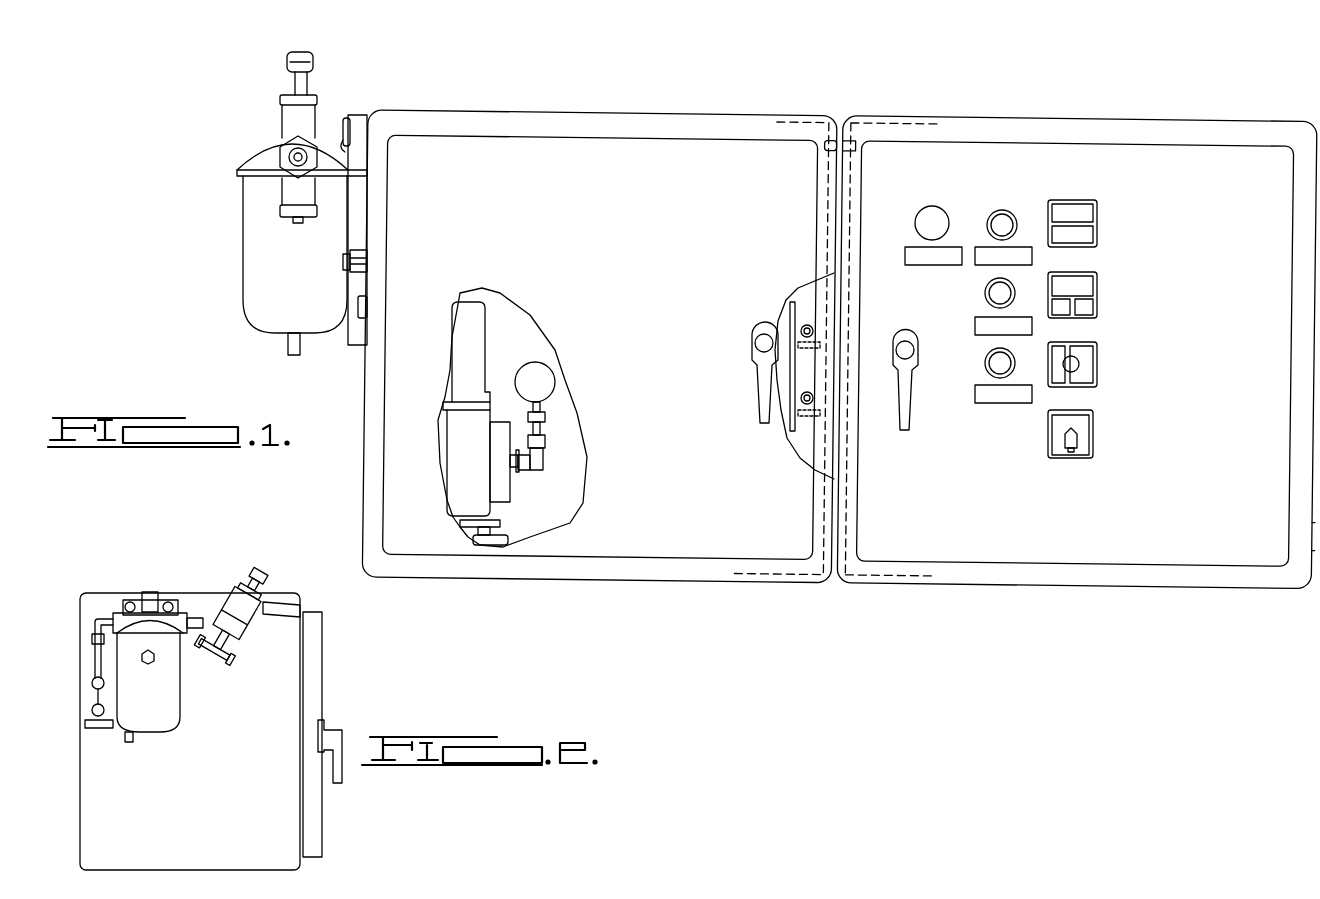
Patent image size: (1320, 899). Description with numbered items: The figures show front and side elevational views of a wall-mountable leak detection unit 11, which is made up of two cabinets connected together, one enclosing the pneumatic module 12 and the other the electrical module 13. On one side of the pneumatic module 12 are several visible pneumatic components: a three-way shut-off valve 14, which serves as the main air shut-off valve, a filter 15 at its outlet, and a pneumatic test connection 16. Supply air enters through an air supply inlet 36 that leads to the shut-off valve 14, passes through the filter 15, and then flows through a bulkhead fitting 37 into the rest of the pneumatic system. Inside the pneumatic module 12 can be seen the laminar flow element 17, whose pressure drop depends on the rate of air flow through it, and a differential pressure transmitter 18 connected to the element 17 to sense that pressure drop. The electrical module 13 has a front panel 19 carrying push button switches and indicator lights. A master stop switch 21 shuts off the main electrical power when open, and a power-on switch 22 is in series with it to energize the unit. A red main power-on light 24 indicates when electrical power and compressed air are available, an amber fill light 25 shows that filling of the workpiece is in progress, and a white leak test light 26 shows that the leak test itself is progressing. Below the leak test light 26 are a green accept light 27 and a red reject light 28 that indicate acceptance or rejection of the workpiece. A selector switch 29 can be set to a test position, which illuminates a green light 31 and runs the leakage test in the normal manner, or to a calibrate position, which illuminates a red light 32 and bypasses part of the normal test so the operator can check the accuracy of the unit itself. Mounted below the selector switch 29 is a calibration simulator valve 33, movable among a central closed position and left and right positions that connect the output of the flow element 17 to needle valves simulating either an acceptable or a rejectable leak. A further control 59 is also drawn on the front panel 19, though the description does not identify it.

In FIG. 1, the leak detection unit 11 is at (622, 597).
In FIG. 1, the pneumatic module 12 is at (607, 157).
In FIG. 1, the electrical module 13 is at (1160, 130).
In FIG. 1, the three-way shut-off valve 14 is at (293, 120).
In FIG. 2, the three-way shut-off valve 14 is at (235, 608).
In FIG. 1, the filter 15 is at (255, 262).
In FIG. 2, the filter 15 is at (167, 700).
In FIG. 2, the pneumatic test connection 16 is at (105, 714).
In FIG. 1, the laminar flow element 17 is at (542, 382).
In FIG. 1, the differential pressure transmitter 18 is at (478, 345).
In FIG. 1, the front panel 19 is at (1075, 353).
In FIG. 1, the master stop switch 21 is at (932, 206).
In FIG. 1, the power-on switch 22 is at (1002, 210).
In FIG. 1, the main power-on light 24 is at (1097, 210).
In FIG. 1, the fill light 25 is at (1097, 235).
In FIG. 1, the leak test light 26 is at (1097, 288).
In FIG. 1, the accept light 27 is at (1060, 316).
In FIG. 1, the reject light 28 is at (1093, 308).
In FIG. 1, the selector switch 29 is at (1079, 372).
In FIG. 1, the green light 31 is at (1056, 388).
In FIG. 1, the red light 32 is at (1092, 360).
In FIG. 1, the calibration simulator valve 33 is at (1070, 450).
In FIG. 2, the air supply inlet 36 is at (276, 600).
In FIG. 1, the bulkhead fitting 37 is at (367, 258).
In FIG. 1, the start test button 59 is at (984, 293).